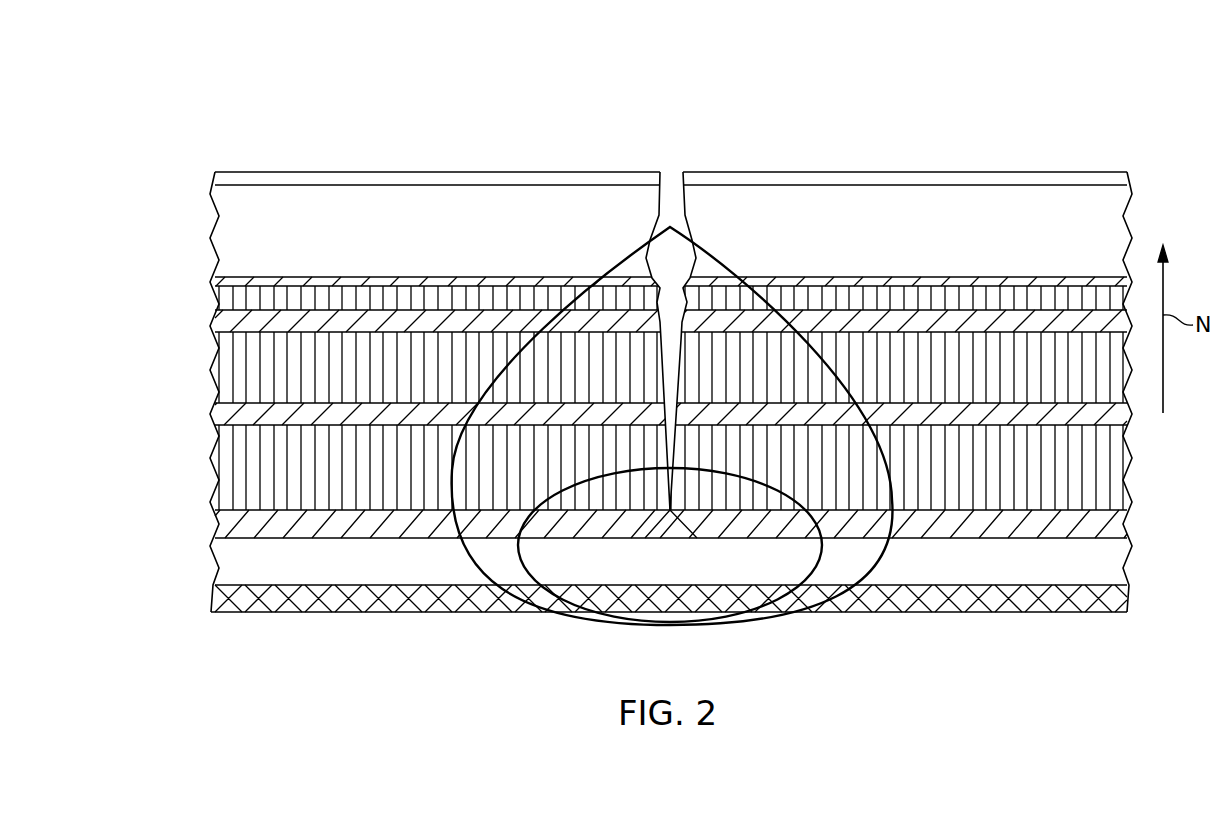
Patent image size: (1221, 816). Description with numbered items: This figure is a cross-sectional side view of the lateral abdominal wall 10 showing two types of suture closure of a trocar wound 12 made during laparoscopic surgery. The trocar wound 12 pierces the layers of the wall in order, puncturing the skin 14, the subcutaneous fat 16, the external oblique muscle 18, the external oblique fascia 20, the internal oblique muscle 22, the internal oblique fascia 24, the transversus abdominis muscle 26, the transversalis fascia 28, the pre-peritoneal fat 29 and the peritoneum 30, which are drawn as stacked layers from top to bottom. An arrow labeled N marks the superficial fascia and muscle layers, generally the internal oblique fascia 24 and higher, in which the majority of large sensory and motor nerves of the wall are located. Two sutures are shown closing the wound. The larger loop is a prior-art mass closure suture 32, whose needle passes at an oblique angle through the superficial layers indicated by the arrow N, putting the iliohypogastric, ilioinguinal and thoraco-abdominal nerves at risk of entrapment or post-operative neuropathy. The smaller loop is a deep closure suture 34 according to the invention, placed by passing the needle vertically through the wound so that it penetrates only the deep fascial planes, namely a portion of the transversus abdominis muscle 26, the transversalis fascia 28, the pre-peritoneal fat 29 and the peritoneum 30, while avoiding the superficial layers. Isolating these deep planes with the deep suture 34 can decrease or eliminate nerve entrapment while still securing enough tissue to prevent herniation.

The lateral abdominal wall 10 is at (671, 327).
The trocar wound 12 is at (670, 178).
The skin 14 is at (248, 172).
The subcutaneous fat 16 is at (228, 250).
The external oblique muscle 18 is at (222, 297).
The external oblique fascia 20 is at (222, 320).
The internal oblique muscle 22 is at (227, 360).
The internal oblique fascia 24 is at (227, 408).
The transversus abdominis muscle 26 is at (227, 455).
The transversalis fascia 28 is at (225, 517).
The pre-peritoneal fat 29 is at (227, 555).
The peritoneum 30 is at (250, 600).
The suture 32 is at (605, 622).
The suture 34 is at (822, 555).